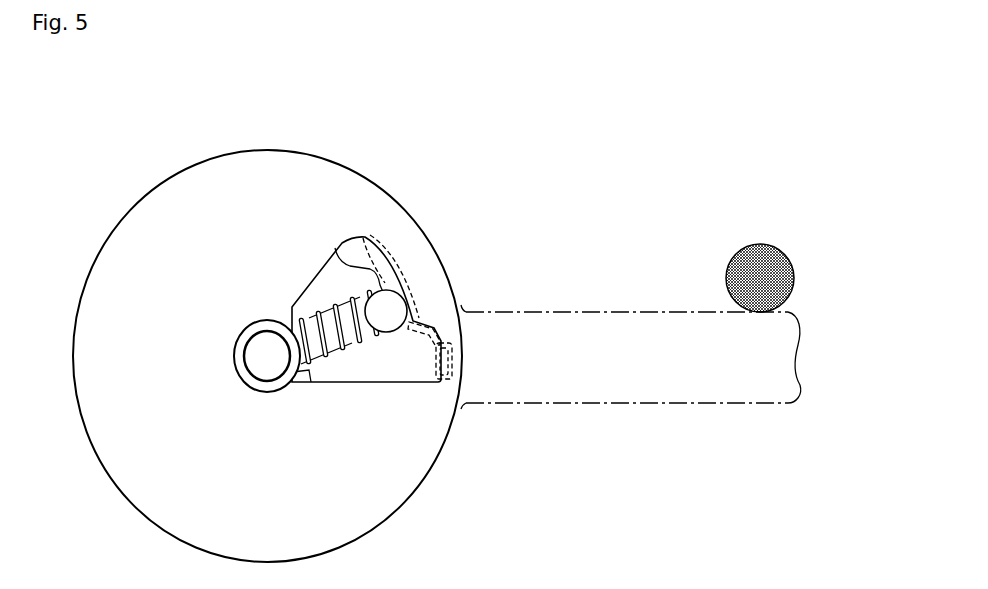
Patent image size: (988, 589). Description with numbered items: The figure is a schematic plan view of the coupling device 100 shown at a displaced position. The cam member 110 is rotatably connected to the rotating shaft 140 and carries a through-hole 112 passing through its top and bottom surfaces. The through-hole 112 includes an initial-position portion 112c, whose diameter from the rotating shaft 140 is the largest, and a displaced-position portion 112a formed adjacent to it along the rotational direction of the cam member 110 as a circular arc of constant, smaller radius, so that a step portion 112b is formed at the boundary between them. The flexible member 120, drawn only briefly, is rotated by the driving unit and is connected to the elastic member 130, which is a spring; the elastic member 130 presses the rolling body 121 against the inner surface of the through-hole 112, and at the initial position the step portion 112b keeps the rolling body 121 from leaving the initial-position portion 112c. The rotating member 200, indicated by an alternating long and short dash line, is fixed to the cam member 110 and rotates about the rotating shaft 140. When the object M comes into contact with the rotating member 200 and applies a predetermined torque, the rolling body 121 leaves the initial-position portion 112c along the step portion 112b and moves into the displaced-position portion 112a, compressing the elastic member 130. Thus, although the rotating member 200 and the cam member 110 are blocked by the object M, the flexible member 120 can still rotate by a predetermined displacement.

The coupling device 100 is at (89, 143).
The cam member 110 is at (287, 170).
The through-hole 112 is at (322, 285).
The displaced-position portion 112a is at (403, 265).
The step portion 112b is at (428, 323).
The initial-position portion 112c is at (452, 362).
The flexible member 120 is at (373, 333).
The rolling body 121 is at (340, 255).
The elastic member 130 is at (320, 358).
The rotating shaft 140 is at (267, 366).
The rotating member 200 is at (640, 322).
The object M is at (793, 268).